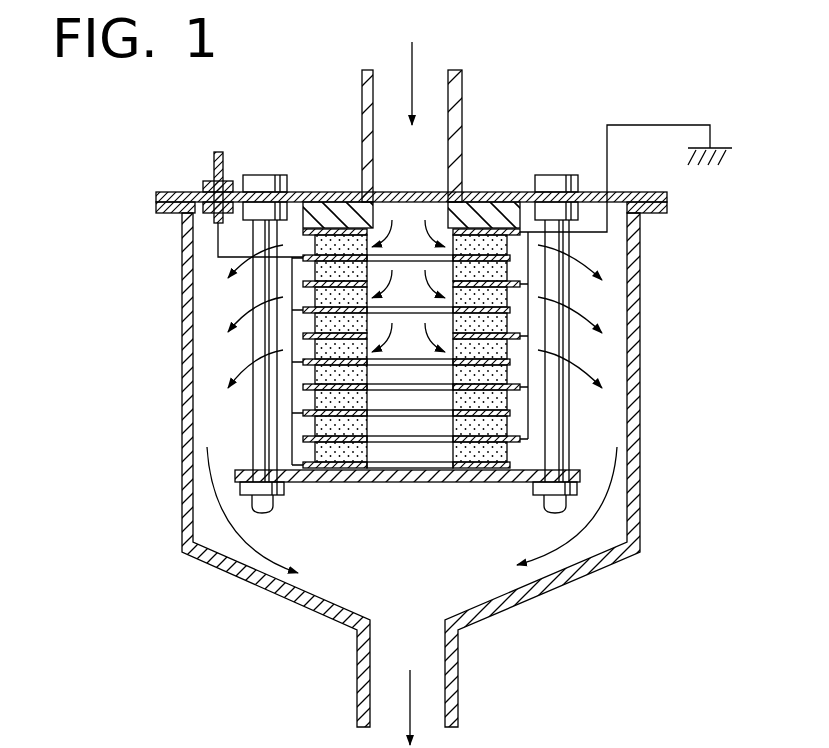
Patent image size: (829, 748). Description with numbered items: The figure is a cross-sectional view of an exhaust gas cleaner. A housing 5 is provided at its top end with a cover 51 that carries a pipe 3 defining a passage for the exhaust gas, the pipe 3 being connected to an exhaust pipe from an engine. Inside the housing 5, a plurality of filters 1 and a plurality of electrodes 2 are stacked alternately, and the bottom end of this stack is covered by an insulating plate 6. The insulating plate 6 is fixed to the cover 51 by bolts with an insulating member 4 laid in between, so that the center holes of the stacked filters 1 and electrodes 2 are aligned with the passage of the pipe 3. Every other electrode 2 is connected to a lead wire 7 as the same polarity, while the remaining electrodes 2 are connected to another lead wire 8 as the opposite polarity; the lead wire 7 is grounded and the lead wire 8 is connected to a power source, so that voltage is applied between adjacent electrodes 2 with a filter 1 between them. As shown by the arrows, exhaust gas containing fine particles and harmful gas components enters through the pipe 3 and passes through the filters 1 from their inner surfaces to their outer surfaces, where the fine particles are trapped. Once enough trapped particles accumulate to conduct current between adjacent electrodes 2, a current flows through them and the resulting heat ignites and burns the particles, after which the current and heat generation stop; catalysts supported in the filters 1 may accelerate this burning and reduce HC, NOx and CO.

The filter 1 is at (338, 229).
The electrode 2 is at (487, 445).
The pipe 3 is at (425, 83).
The insulating member 4 is at (482, 207).
The housing 5 is at (640, 335).
The cover 51 is at (660, 192).
The insulating plate 6 is at (372, 478).
The lead wire 7 is at (645, 125).
The lead wire 8 is at (212, 165).